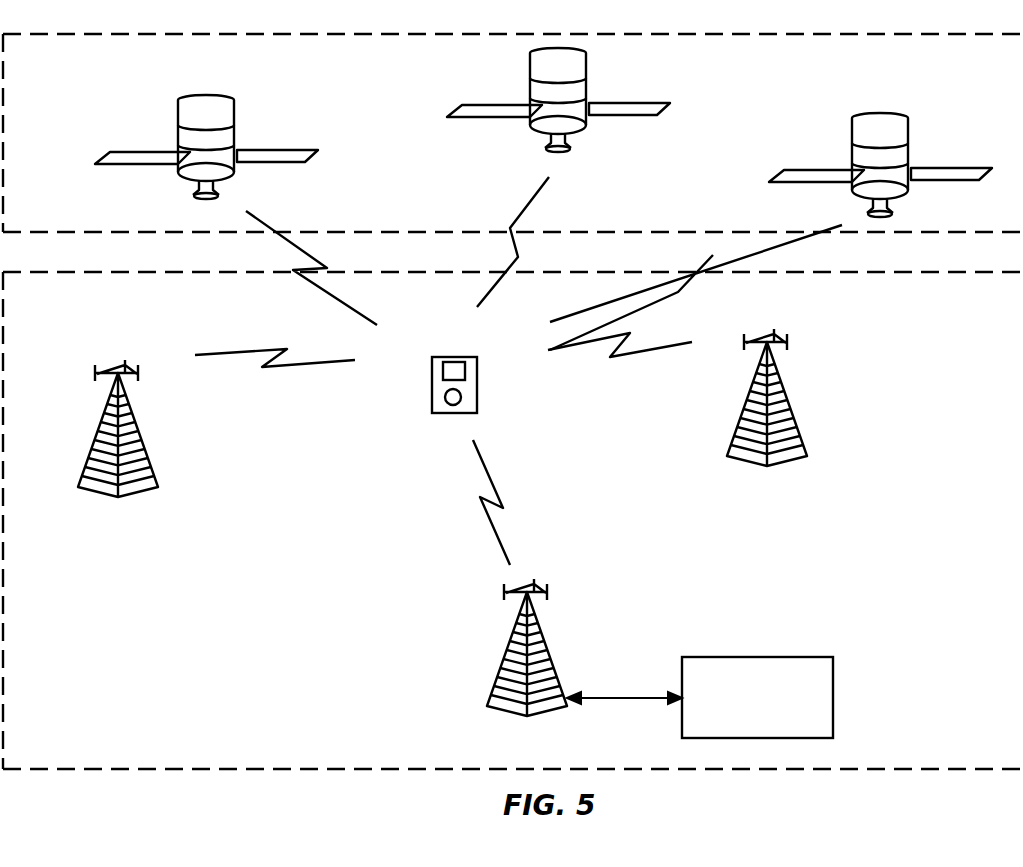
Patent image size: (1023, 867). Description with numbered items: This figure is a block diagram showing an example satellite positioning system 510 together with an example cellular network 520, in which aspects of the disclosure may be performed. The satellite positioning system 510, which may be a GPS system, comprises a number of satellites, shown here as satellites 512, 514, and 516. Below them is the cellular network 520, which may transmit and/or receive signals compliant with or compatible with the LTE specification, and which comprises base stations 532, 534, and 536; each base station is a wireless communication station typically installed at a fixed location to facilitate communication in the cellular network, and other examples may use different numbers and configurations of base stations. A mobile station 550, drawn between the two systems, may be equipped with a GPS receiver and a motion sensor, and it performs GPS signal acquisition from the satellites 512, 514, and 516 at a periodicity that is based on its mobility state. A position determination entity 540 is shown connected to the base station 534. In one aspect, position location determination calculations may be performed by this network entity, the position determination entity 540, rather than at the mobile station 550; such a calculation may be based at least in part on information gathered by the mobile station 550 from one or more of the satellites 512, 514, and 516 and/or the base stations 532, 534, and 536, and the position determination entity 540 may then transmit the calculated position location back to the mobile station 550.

The satellite positioning system 510 is at (141, 34).
The satellite 512 is at (236, 112).
The satellite 514 is at (590, 68).
The satellite 516 is at (909, 132).
The cellular network 520 is at (80, 770).
The base station 532 is at (135, 422).
The base station 534 is at (540, 632).
The base station 536 is at (783, 388).
The position determination entity 540 is at (770, 657).
The mobile station 550 is at (455, 356).